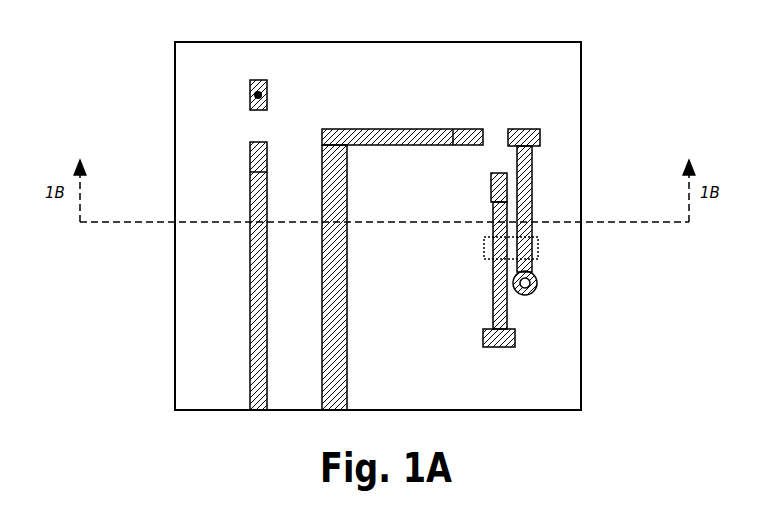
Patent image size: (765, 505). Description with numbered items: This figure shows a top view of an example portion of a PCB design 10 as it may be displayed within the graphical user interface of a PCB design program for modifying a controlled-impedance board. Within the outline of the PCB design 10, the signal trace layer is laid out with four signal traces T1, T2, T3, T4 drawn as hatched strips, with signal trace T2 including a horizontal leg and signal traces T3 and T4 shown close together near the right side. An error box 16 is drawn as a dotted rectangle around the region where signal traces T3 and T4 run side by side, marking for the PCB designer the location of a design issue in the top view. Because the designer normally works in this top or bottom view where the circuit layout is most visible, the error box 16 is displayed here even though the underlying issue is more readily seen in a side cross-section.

The PCB design 10 is at (582, 42).
The error box 16 is at (538, 248).
The signal trace T1 is at (250, 284).
The signal trace T2 is at (322, 286).
The signal trace T3 is at (493, 287).
The signal trace T4 is at (533, 171).